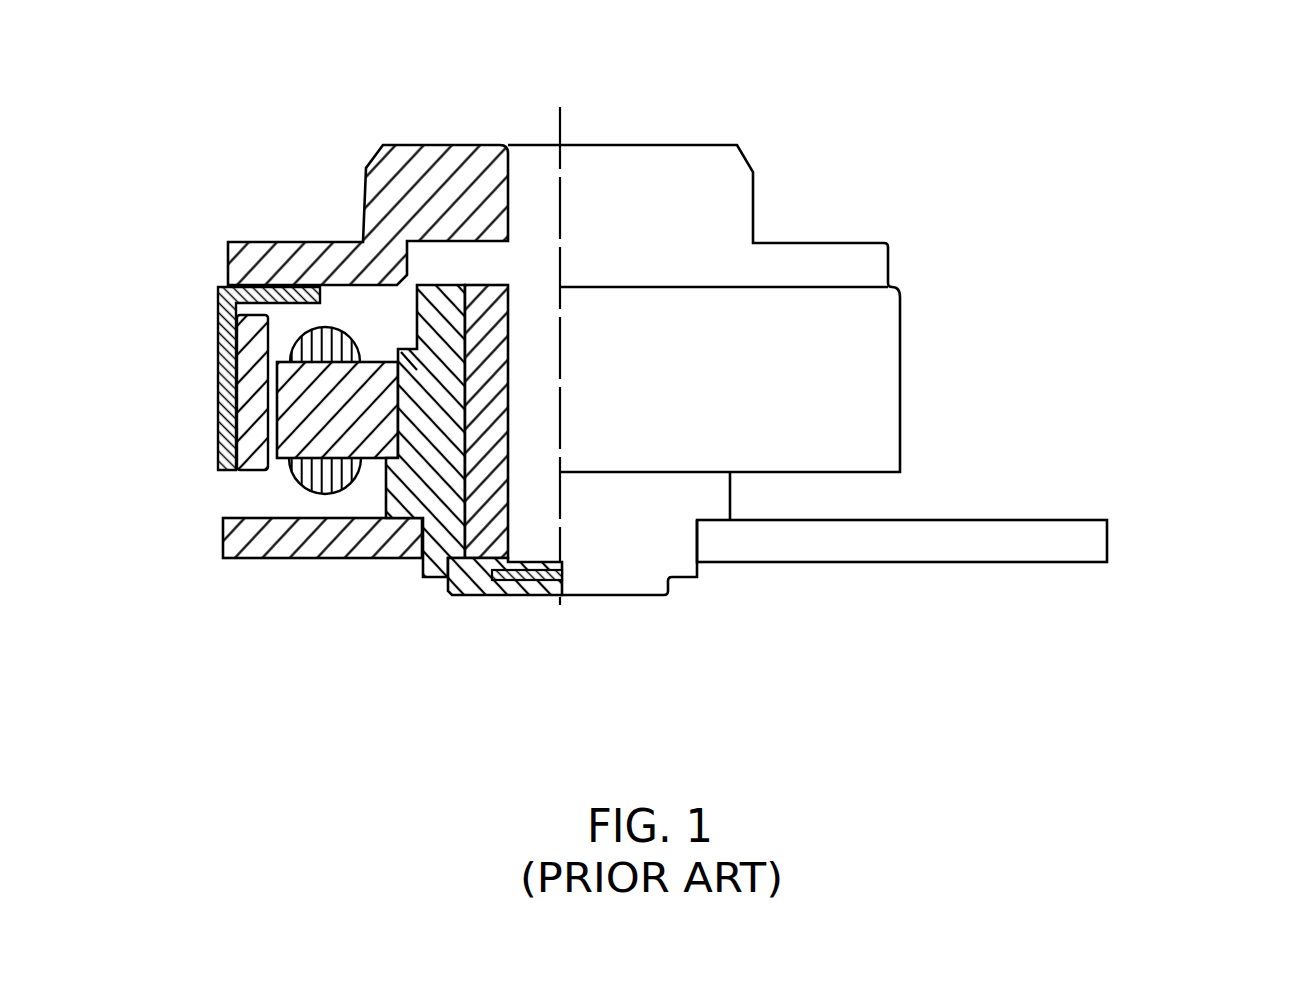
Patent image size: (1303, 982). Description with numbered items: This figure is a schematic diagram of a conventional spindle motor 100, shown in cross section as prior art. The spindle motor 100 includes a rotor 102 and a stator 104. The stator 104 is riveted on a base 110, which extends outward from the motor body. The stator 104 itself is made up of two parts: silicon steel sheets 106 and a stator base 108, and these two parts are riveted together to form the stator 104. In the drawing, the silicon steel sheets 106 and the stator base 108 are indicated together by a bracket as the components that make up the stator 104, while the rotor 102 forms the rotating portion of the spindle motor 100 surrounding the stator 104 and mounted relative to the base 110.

The spindle motor 100 is at (94, 59).
The rotor 102 is at (437, 175).
The stator 104 is at (397, 532).
The silicon steel sheets 106 is at (318, 413).
The stator base 108 is at (410, 482).
The base 110 is at (1053, 543).